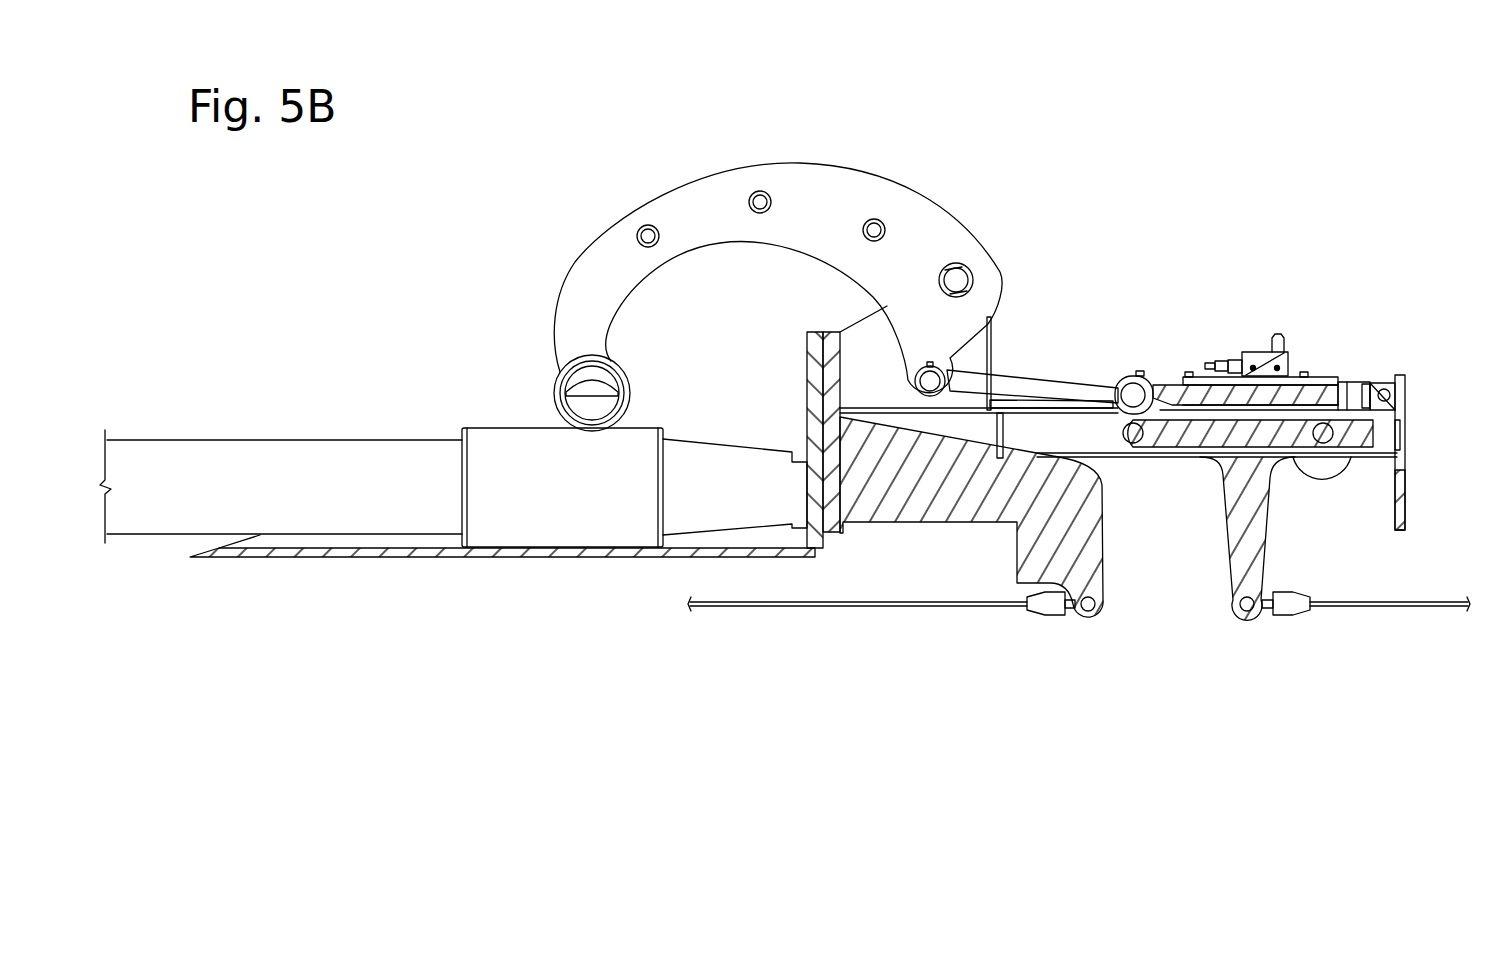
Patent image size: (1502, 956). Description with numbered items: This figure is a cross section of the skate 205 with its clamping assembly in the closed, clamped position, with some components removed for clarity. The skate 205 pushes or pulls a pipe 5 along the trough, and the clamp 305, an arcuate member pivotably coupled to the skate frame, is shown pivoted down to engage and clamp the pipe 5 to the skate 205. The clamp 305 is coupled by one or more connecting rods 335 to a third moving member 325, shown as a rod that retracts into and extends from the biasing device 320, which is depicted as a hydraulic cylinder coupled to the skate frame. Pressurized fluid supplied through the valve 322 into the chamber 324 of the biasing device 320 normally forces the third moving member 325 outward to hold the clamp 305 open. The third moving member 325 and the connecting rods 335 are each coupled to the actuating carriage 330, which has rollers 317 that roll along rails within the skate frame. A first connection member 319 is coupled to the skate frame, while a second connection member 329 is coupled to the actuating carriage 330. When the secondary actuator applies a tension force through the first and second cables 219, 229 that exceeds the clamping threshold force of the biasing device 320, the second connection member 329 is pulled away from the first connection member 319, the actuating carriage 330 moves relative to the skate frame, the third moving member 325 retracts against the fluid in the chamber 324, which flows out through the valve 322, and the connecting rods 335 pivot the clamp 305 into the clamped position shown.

The pipe 5 is at (265, 437).
The skate 205 is at (352, 560).
The clamp 305 is at (803, 162).
The connecting rods 335 is at (1035, 385).
The actuating carriage 330 is at (1146, 385).
The third moving member 325 is at (1163, 385).
The valve 322 is at (1250, 352).
The biasing device 320 is at (1318, 385).
The chamber 324 is at (1357, 395).
The rollers 317 is at (1102, 455).
The first connection member 319 is at (1020, 568).
The second connection member 329 is at (1258, 549).
The first cable 219 is at (872, 607).
The second cable 229 is at (1384, 607).